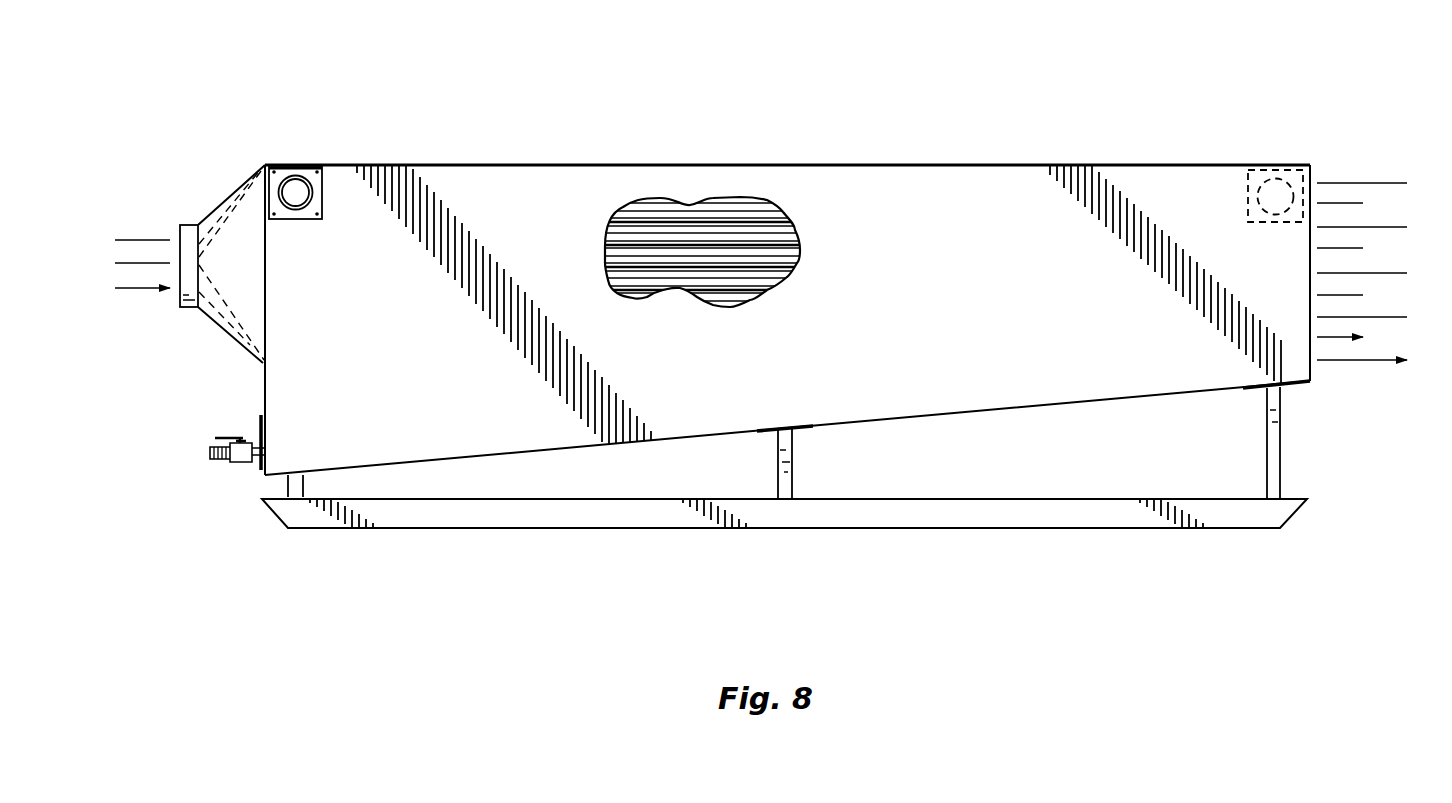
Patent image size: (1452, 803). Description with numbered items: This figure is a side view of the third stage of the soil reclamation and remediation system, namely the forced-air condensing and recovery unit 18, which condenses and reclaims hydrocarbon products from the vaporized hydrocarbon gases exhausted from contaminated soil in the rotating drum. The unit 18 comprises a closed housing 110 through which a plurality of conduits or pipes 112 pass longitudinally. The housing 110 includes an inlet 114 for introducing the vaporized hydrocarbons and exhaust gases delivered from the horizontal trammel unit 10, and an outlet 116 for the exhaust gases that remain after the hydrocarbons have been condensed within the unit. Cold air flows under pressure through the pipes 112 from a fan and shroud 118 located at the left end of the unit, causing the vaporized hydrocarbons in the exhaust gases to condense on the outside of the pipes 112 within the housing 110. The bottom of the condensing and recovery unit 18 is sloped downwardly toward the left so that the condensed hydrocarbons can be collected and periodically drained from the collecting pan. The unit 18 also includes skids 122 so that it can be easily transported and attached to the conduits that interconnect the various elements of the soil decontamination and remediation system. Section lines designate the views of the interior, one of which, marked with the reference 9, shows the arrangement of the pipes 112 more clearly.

The forced-air condensing and recovery unit 18 is at (667, 143).
The housing 110 is at (885, 227).
The conduits (pipes) 112 is at (728, 227).
The inlet 114 is at (1247, 190).
The outlet 116 is at (290, 172).
The fan and shroud 118 is at (187, 225).
The skids 122 is at (663, 513).
The section line 9- 9 is at (1353, 167).
The horizontal trammel unit 10 is at (150, 260).